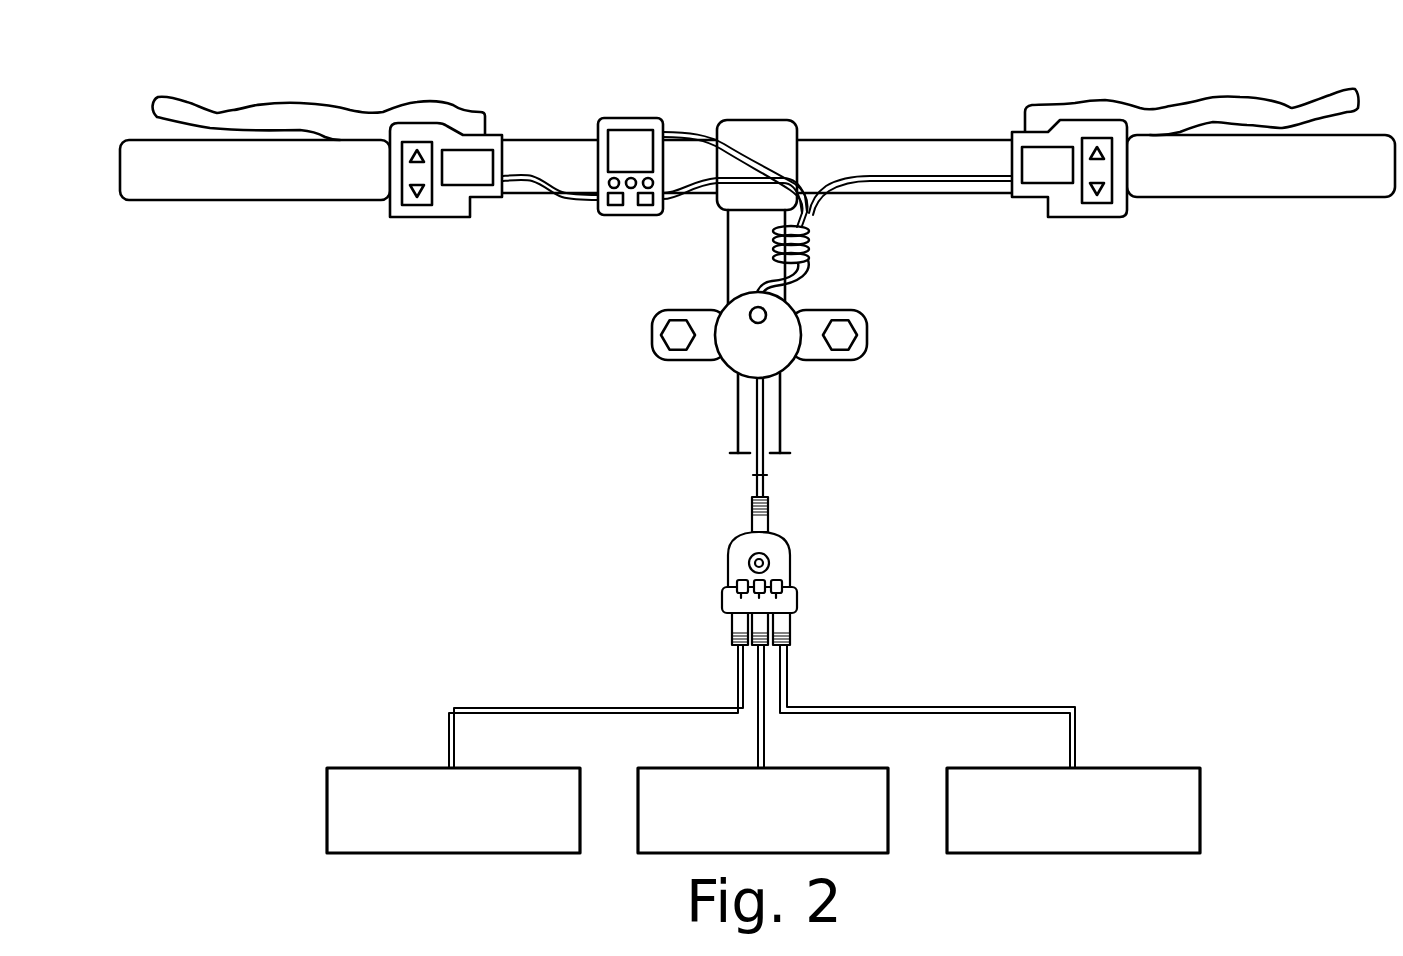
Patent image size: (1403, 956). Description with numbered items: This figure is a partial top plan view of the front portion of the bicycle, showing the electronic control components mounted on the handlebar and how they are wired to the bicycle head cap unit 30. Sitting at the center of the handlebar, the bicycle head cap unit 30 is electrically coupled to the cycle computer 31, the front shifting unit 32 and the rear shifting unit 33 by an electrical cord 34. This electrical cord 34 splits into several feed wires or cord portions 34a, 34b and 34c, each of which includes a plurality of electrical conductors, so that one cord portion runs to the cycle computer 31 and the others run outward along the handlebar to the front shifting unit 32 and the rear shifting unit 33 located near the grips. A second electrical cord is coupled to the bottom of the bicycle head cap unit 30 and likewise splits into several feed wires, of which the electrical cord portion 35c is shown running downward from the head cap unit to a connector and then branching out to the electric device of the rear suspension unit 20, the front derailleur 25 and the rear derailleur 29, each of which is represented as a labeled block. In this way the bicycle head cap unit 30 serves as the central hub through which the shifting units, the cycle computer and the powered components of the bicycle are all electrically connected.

The rear suspension unit 20 is at (363, 768).
The front derailleur 25 is at (1137, 768).
The rear derailleur 29 is at (822, 768).
The bicycle head cap unit 30 is at (792, 372).
The cycle computer 31 is at (623, 120).
The front shifting unit 32 is at (499, 130).
The rear shifting unit 33 is at (1013, 132).
The electrical cord 34 is at (816, 237).
The electrical cord portion 34a is at (740, 150).
The electrical cord portion 34b is at (530, 184).
The electrical cord portion 34c is at (987, 183).
The electrical cord portion 35c is at (767, 433).